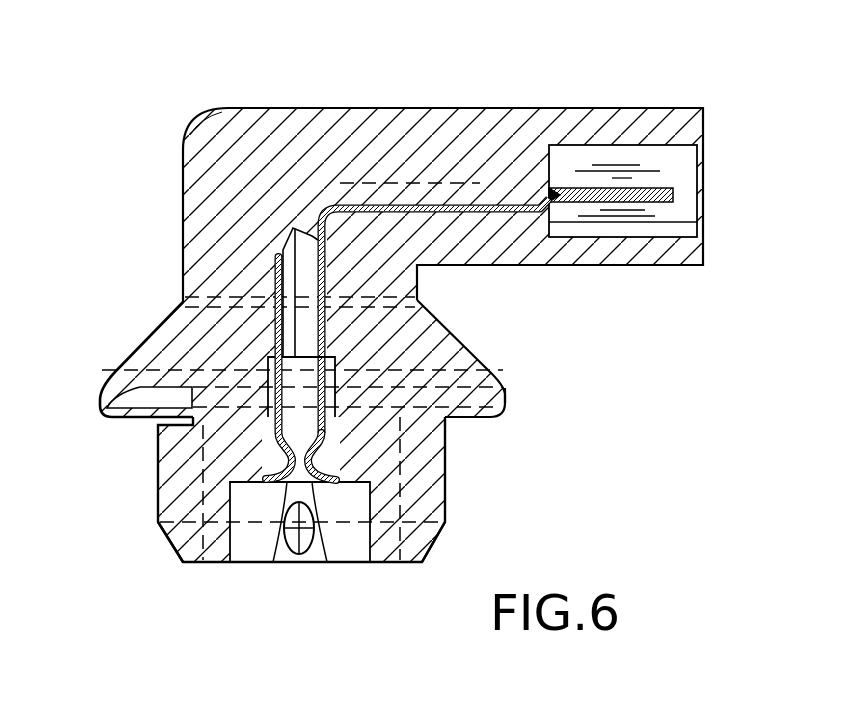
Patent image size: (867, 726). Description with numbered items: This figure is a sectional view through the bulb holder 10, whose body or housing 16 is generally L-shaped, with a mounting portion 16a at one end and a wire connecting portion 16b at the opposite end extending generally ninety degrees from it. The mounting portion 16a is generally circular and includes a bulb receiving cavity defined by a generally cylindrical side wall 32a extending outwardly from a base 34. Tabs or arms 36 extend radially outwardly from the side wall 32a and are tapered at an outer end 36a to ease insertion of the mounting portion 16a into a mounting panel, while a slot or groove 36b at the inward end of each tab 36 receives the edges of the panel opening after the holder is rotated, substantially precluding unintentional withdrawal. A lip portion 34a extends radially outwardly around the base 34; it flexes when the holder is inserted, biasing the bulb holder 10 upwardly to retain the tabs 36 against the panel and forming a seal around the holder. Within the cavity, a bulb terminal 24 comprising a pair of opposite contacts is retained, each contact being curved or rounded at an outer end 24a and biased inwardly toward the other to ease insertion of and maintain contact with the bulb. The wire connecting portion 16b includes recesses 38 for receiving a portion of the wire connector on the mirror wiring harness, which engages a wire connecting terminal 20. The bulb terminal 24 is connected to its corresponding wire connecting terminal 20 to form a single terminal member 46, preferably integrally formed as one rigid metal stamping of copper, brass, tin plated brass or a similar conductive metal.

The bulb holder 10 is at (148, 90).
The housing 16 is at (207, 187).
The mounting portion 16a is at (515, 430).
The wire connecting portion 16b is at (558, 108).
The wire connecting terminal 20 is at (665, 188).
The bulb terminal 24 is at (332, 457).
The outer end 24a is at (270, 490).
The cylindrical side wall 32a is at (447, 509).
The base 34 is at (452, 342).
The lip portion 34a is at (100, 405).
The tab 36 is at (168, 493).
The outer end 36a is at (182, 558).
The groove 36b is at (153, 425).
The recess 38 is at (670, 165).
The terminal member 46 is at (302, 214).